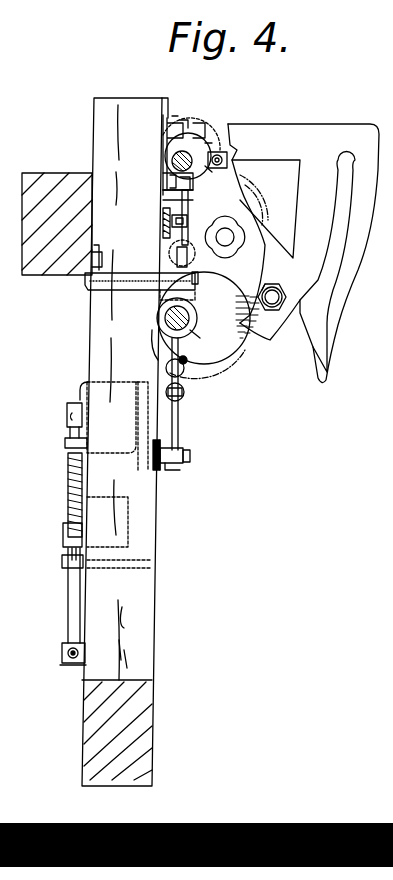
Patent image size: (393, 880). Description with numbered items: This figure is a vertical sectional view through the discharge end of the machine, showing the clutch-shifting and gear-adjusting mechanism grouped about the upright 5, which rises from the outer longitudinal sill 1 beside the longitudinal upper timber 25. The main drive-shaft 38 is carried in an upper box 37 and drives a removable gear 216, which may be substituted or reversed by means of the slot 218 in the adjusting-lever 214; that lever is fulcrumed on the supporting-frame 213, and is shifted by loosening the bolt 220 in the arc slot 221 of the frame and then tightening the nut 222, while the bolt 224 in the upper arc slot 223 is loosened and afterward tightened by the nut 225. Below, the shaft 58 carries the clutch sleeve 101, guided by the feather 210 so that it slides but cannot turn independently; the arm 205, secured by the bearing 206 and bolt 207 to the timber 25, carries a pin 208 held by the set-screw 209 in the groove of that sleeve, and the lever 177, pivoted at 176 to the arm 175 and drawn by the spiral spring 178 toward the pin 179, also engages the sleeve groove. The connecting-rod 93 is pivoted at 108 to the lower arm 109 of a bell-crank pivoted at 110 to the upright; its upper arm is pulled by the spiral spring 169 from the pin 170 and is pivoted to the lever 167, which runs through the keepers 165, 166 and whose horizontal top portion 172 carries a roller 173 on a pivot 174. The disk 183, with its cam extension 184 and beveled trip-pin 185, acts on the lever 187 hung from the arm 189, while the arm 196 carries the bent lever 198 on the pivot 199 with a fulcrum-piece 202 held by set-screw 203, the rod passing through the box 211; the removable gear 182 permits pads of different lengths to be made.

The outer longitudinal sill 1 is at (122, 442).
The upright 5 is at (122, 637).
The longitudinal upper timber 25 is at (53, 178).
The box 37 is at (186, 140).
The main drive-shaft 38 is at (194, 148).
The shaft 58 is at (165, 320).
The connecting-rod 93 is at (66, 666).
The sleeve 101 is at (195, 335).
The pivotal connection 108 is at (62, 658).
The lower arm 109 is at (68, 628).
The pivot 110 is at (62, 572).
The keeper 165 is at (67, 410).
The keeper 166 is at (63, 542).
The lever 167 is at (70, 432).
The spiral spring 169 is at (68, 514).
The pin 170 is at (65, 443).
The horizontal top portion 172 is at (182, 398).
The roller 173 is at (185, 385).
The pivot 174 is at (182, 415).
The arm 175 is at (161, 472).
The pivotal connection 176 is at (186, 466).
The lever 177 is at (191, 456).
The spiral spring 178 is at (185, 436).
The pin 179 is at (146, 400).
The gear 182 is at (155, 335).
The disk 183 is at (222, 348).
The cam extension 184 is at (244, 322).
The beveled trip-pin 185 is at (200, 372).
The lever 187 is at (160, 140).
The arm 189 is at (170, 116).
The arm 196 is at (160, 170).
The bent lever 198 is at (187, 222).
The pivot 199 is at (184, 124).
The fulcrum-piece 202 is at (164, 210).
The set-screw 203 is at (162, 196).
The arm 205 is at (135, 276).
The bearing 206 is at (96, 252).
The bolt 207 is at (92, 258).
The pin 208 is at (175, 299).
The set-screw 209 is at (199, 280).
The feather 210 is at (190, 316).
The box 211 is at (172, 246).
The supporting-frame 213 is at (274, 124).
The adjusting-lever 214 is at (242, 240).
The gear 216 is at (270, 210).
The slot 218 is at (250, 205).
The bolt 220 is at (283, 290).
The arc slot 221 is at (345, 190).
The nut 222 is at (290, 300).
The upper arc slot 223 is at (228, 172).
The bolt 224 is at (232, 152).
The nut 225 is at (214, 148).